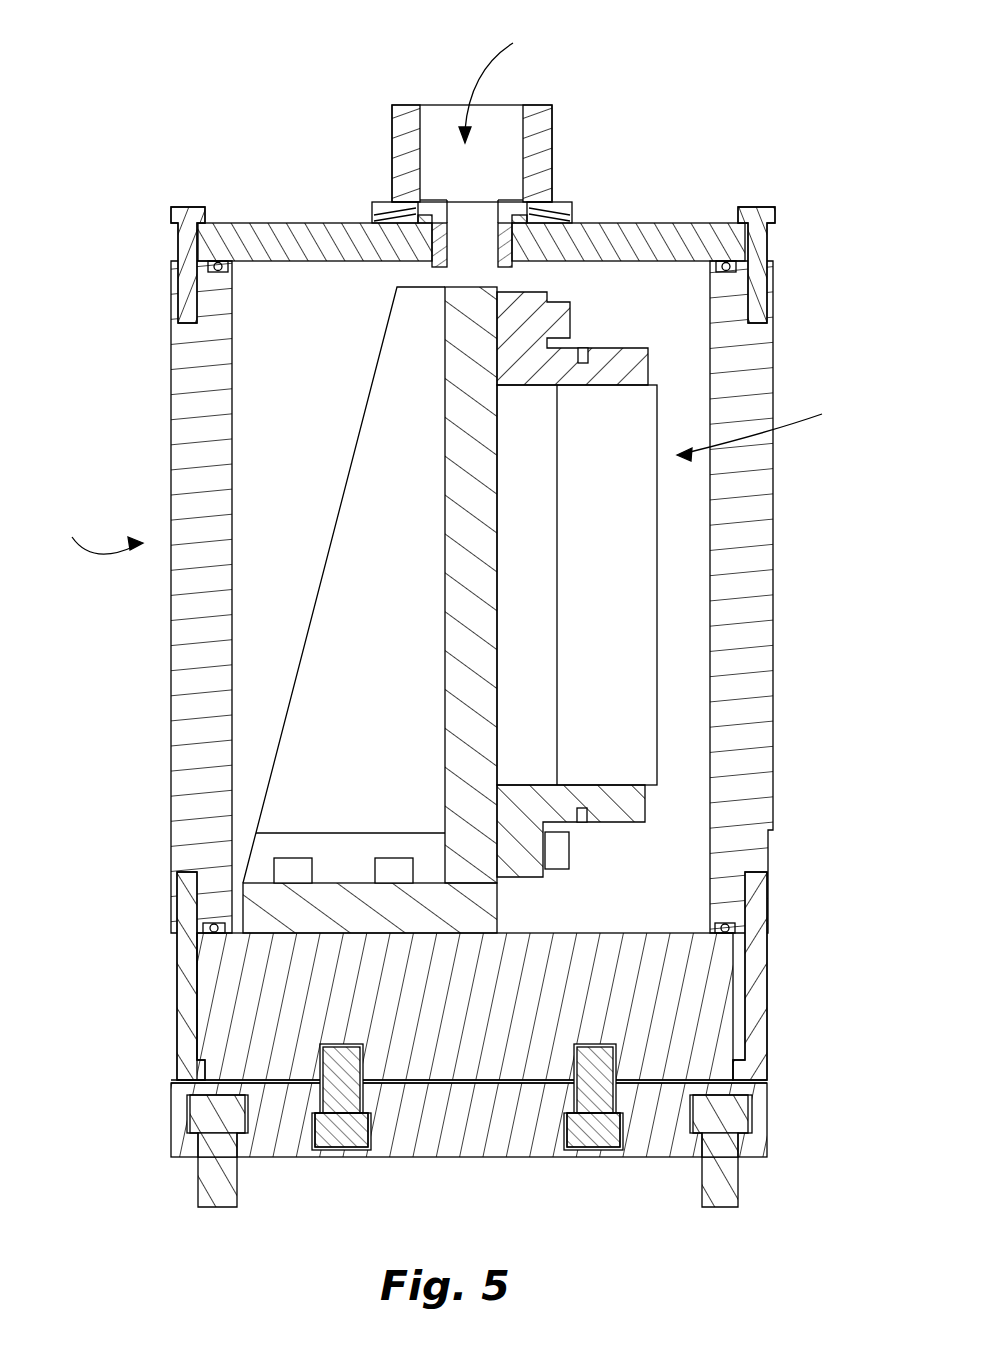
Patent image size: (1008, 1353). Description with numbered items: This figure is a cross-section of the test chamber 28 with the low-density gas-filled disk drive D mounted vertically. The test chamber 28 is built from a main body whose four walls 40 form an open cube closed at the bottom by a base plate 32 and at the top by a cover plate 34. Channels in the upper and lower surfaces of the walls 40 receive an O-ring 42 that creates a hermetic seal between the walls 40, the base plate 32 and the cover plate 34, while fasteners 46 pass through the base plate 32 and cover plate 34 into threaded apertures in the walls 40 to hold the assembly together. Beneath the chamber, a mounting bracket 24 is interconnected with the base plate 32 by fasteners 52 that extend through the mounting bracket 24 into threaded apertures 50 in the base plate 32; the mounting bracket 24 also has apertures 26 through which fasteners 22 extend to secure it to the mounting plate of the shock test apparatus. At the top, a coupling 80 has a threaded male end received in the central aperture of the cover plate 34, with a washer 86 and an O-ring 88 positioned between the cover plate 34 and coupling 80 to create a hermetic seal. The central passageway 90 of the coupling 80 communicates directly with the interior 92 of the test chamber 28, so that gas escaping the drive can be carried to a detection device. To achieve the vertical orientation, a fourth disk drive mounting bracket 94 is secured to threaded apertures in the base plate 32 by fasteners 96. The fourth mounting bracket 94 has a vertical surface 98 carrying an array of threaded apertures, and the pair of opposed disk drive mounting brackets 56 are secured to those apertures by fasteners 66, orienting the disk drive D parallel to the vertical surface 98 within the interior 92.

The fasteners 22 is at (220, 1183).
The mounting bracket 24 is at (760, 1143).
The apertures 26 is at (210, 1087).
The test chamber 28 is at (95, 523).
The base plate 32 is at (722, 990).
The cover plate 34 is at (717, 242).
The walls 40 is at (185, 663).
The O-ring 42 is at (220, 270).
The fasteners 46 is at (185, 208).
The threaded apertures 50 is at (347, 1048).
The fasteners 52 is at (337, 1135).
The disk drive mounting brackets 56 is at (518, 373).
The fasteners 66 is at (558, 852).
The coupling 80 is at (403, 110).
The washer 86 is at (383, 213).
The O-ring 88 is at (428, 215).
The central passageway 90 is at (510, 84).
The interior 92 is at (765, 425).
The fourth disk drive mounting bracket 94 is at (392, 425).
The fasteners 96 is at (400, 858).
The vertical surface 98 is at (522, 568).
The disk drive D is at (605, 533).